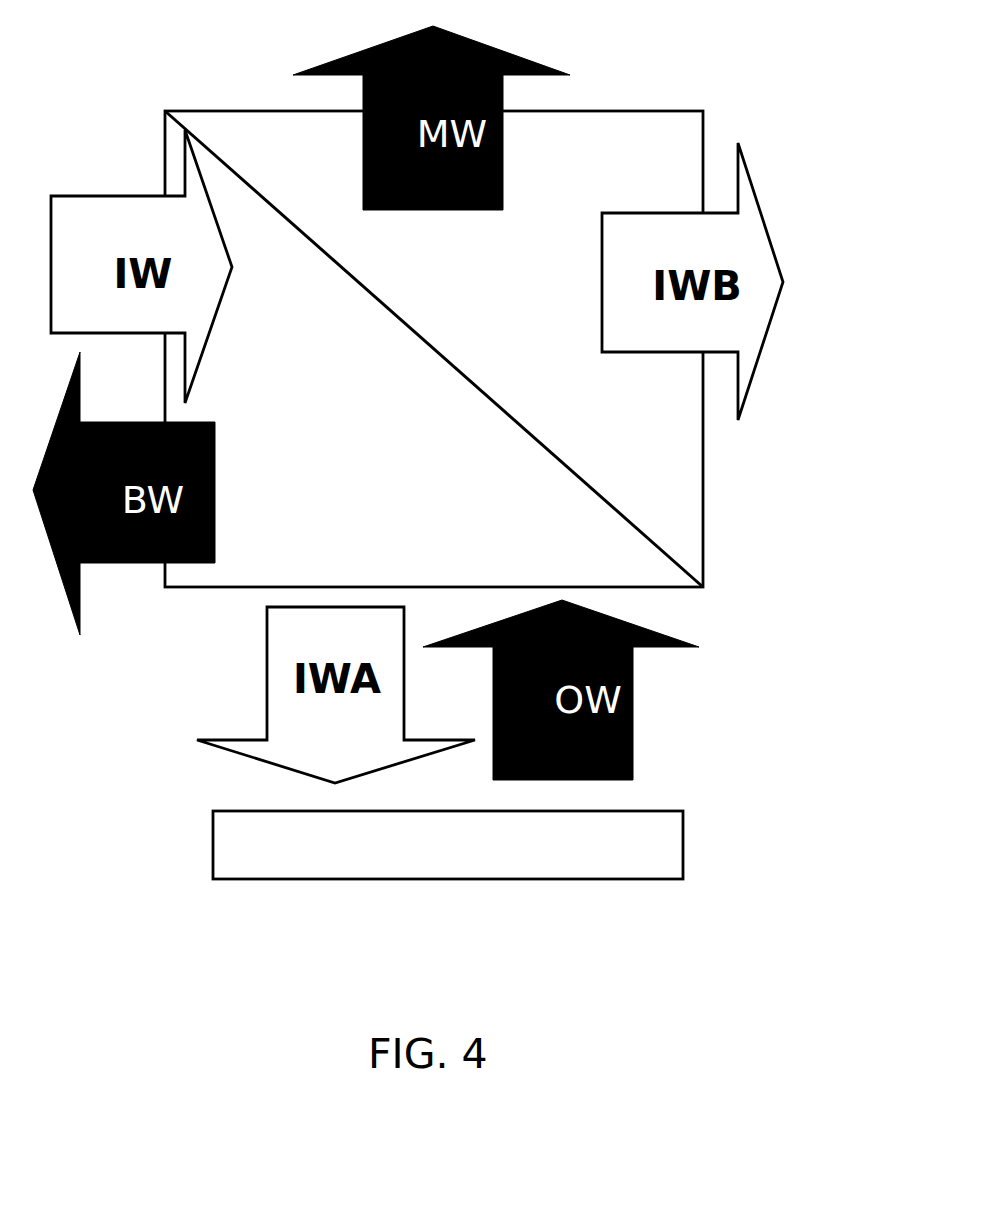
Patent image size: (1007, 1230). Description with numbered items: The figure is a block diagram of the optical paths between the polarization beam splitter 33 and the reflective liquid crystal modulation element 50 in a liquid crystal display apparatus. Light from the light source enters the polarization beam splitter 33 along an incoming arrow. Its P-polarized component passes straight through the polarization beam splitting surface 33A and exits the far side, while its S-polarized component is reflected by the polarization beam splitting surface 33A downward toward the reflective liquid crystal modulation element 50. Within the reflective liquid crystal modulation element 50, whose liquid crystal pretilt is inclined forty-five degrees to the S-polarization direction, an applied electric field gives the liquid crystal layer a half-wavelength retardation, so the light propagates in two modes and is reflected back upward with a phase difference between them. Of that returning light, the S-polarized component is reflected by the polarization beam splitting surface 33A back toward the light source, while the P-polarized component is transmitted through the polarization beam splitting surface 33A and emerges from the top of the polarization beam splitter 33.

The polarization beam splitter 33 is at (495, 351).
The polarization beam splitting surface 33A is at (555, 452).
The reflective liquid crystal modulation element 50 is at (460, 891).